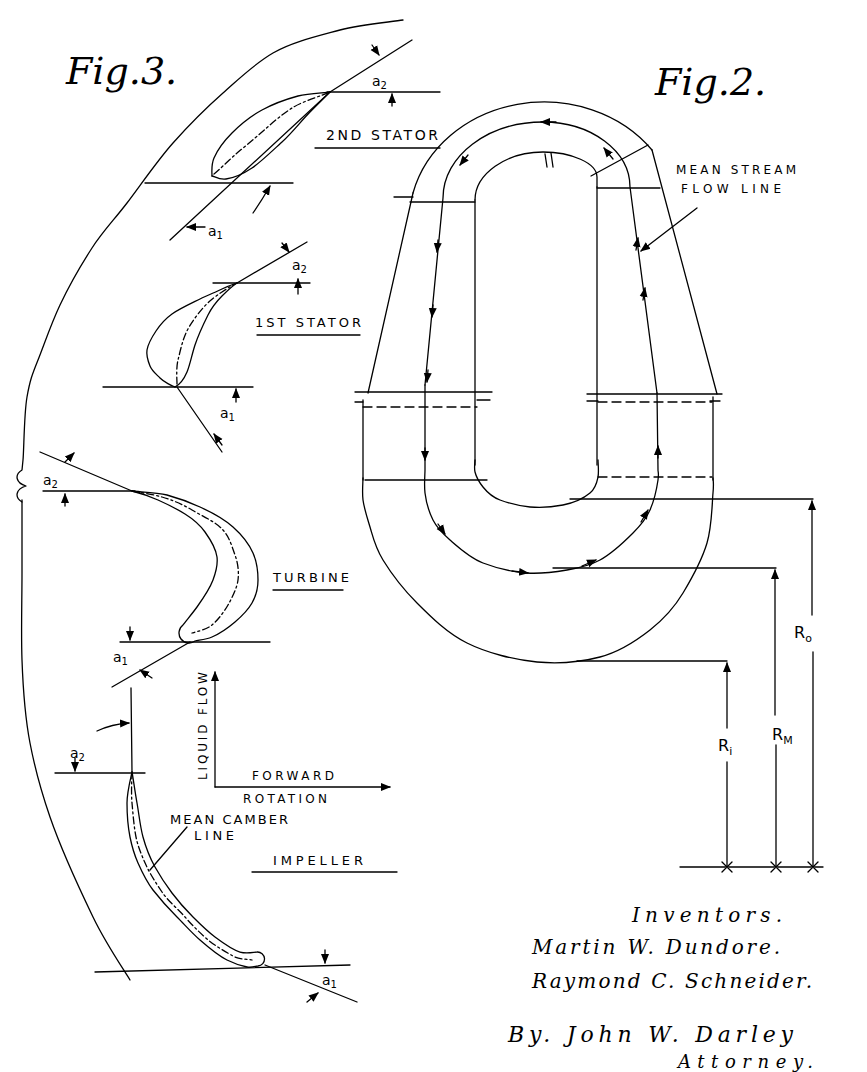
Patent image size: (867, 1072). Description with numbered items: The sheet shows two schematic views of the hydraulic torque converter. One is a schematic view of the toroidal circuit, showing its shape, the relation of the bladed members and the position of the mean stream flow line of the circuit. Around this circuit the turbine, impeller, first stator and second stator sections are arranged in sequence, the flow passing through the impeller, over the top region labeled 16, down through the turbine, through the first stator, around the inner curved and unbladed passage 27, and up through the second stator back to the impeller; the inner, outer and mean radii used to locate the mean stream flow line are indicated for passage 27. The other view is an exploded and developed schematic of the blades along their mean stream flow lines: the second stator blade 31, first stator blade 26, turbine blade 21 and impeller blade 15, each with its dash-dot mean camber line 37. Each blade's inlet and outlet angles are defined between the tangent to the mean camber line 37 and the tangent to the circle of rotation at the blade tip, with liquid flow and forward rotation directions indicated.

In FIG. 3, the impeller blade 15 is at (197, 913).
In FIG. 2, the impeller blade 15 is at (677, 280).
In FIG. 2, the top passage of toroidal circuit 16 is at (548, 153).
In FIG. 3, the turbine blade 21 is at (240, 613).
In FIG. 2, the turbine blade 21 is at (403, 273).
In FIG. 3, the first stator blade 26 is at (200, 332).
In FIG. 2, the first stator blade 26 is at (372, 428).
In FIG. 2, the inner curved and unbladed passage 27 is at (546, 627).
In FIG. 3, the second stator blade 31 is at (263, 145).
In FIG. 2, the second stator blade 31 is at (702, 413).
In FIG. 3, the mean camber line 37 is at (253, 163).